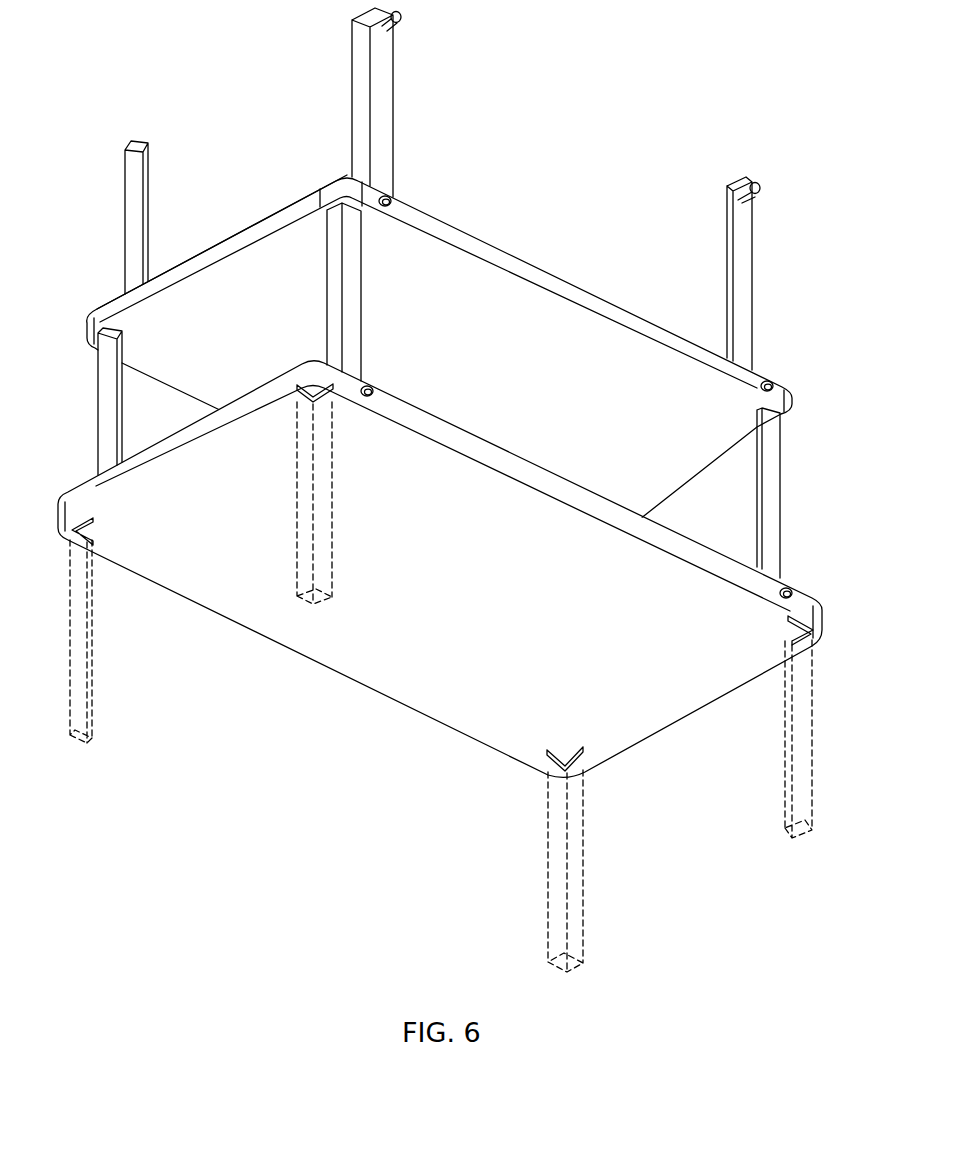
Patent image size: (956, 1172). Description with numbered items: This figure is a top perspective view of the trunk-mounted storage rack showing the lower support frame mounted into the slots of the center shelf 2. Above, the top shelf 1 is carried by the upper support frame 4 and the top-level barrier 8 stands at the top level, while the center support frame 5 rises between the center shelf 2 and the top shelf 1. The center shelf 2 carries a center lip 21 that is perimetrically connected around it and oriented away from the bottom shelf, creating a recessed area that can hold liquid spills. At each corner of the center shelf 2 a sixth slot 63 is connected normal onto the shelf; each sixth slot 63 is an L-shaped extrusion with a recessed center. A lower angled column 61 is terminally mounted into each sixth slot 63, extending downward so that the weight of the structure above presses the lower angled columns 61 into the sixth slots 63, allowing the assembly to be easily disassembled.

The top shelf 1 is at (787, 400).
The center shelf 2 is at (440, 569).
The upper support frame 4 is at (352, 98).
The center support frame 5 is at (102, 414).
The top-level barrier 8 is at (193, 181).
The center lip 21 is at (667, 538).
The lower angled columns 61 is at (84, 744).
The sixth slots 63 is at (330, 396).